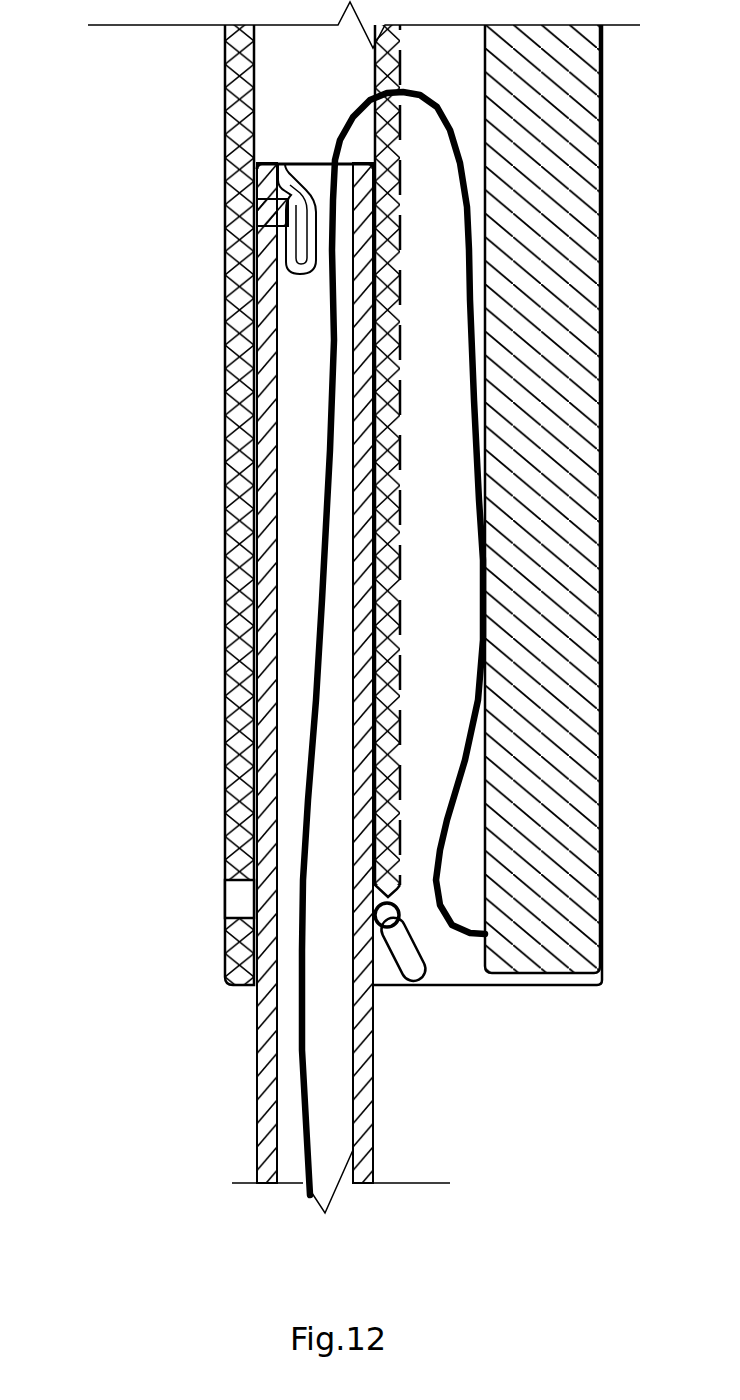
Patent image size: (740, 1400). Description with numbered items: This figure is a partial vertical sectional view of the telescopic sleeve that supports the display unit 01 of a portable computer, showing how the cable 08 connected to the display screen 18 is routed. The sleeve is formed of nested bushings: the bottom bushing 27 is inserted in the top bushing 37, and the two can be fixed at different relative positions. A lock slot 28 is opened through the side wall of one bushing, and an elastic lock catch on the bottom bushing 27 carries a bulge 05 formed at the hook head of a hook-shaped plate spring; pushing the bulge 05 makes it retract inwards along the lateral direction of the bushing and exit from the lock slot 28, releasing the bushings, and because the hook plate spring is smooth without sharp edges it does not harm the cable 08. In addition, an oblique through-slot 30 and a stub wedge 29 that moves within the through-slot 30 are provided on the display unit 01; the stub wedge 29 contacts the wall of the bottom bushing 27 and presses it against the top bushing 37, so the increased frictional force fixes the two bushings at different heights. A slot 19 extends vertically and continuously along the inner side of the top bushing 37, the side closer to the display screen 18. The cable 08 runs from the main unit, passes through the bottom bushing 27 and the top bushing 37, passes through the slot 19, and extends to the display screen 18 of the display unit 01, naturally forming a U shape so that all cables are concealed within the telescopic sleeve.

The display unit 01 is at (441, 963).
The bulge 05 is at (258, 212).
The cable 08 is at (305, 693).
The display screen 18 is at (575, 938).
The slot 19 is at (375, 157).
The bottom bushing 27 is at (277, 1147).
The lock slot 28 is at (226, 898).
The stub wedge 29 is at (385, 917).
The oblique through-slot 30 is at (397, 968).
The top bushing 37 is at (223, 378).